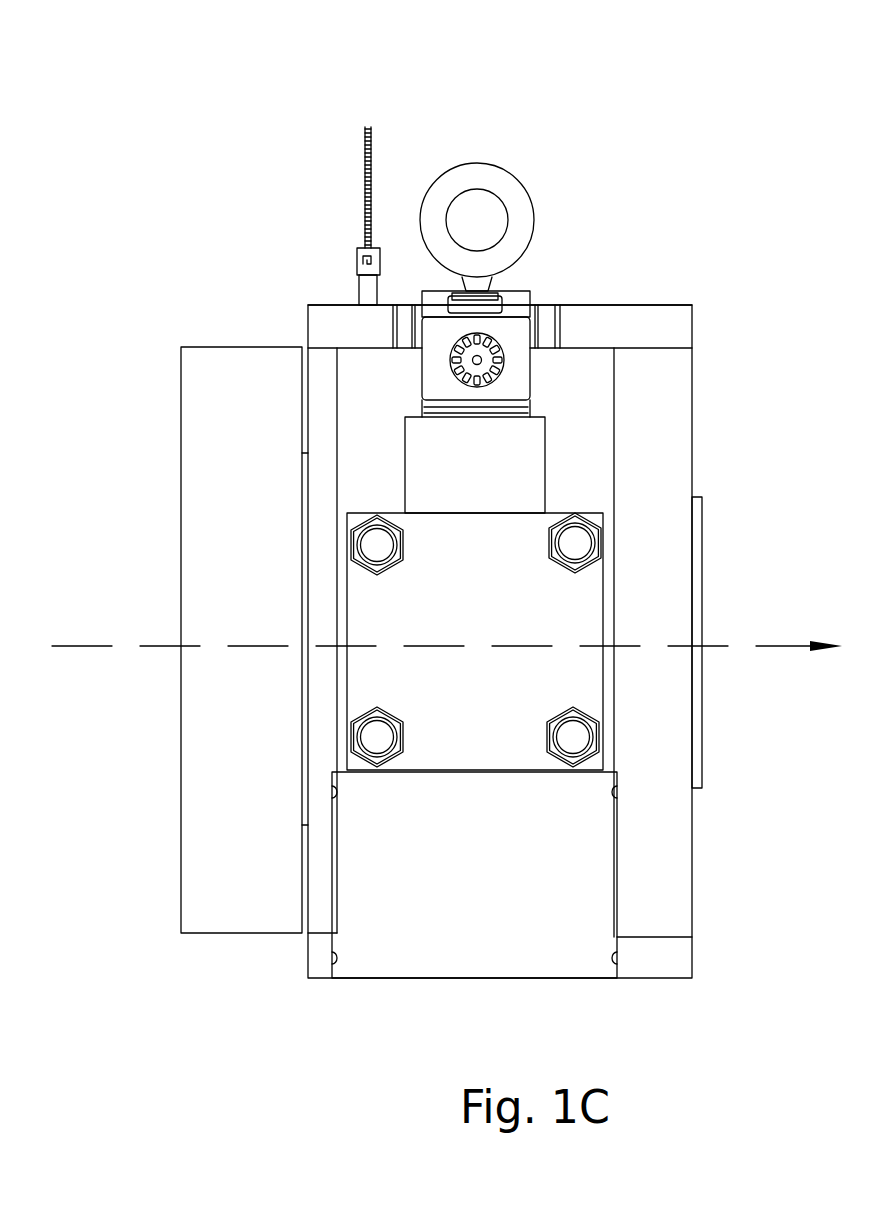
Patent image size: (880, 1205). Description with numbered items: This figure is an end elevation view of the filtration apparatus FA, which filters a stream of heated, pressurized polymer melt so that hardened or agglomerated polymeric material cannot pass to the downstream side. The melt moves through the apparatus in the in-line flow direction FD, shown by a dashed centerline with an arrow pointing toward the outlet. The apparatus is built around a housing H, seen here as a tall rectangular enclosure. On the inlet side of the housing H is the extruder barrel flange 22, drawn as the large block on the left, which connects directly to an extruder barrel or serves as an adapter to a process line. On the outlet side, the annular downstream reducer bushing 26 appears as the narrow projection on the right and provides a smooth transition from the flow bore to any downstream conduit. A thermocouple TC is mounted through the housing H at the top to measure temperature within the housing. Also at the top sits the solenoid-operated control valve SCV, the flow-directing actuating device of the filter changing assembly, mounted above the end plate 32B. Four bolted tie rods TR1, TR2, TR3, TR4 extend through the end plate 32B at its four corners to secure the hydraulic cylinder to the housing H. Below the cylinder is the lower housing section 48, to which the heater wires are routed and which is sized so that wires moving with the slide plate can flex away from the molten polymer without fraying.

The housing H is at (258, 287).
The filtration apparatus FA is at (728, 113).
The thermocouple TC is at (360, 173).
The solenoid-operated control valve SCV is at (532, 358).
The extruder barrel flange 22 is at (204, 347).
The downstream reducer bushing 26 is at (703, 518).
The end plate 32B is at (605, 680).
The lower housing section 48 is at (367, 985).
The tie rod TR1 is at (375, 545).
The tie rod TR2 is at (578, 543).
The tie rod TR3 is at (370, 737).
The tie rod TR4 is at (578, 738).
The in-line flow direction FD is at (770, 646).